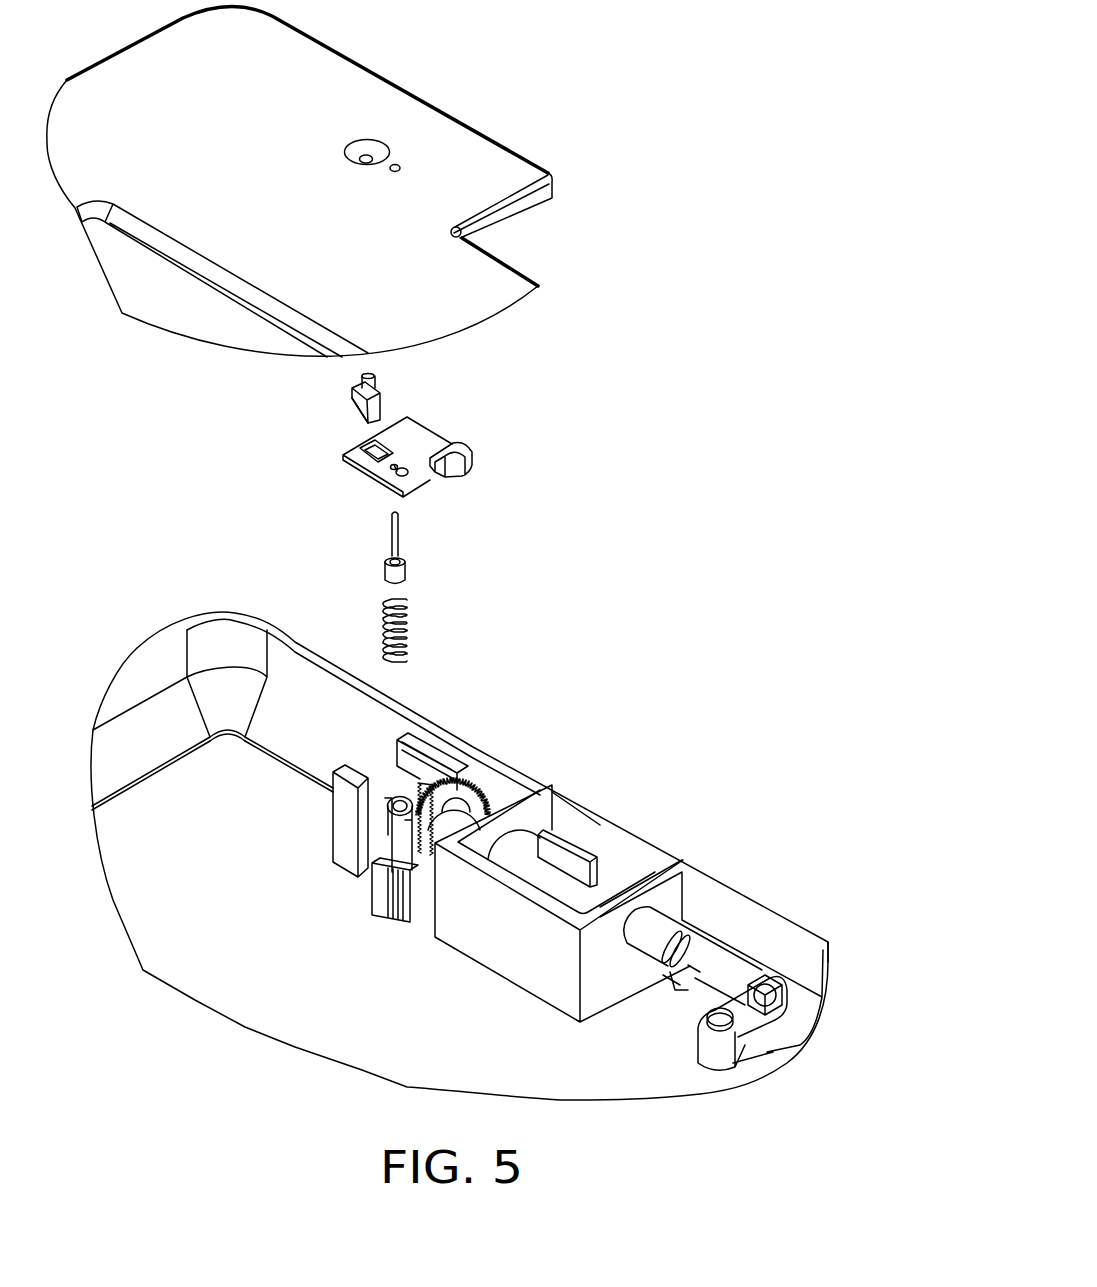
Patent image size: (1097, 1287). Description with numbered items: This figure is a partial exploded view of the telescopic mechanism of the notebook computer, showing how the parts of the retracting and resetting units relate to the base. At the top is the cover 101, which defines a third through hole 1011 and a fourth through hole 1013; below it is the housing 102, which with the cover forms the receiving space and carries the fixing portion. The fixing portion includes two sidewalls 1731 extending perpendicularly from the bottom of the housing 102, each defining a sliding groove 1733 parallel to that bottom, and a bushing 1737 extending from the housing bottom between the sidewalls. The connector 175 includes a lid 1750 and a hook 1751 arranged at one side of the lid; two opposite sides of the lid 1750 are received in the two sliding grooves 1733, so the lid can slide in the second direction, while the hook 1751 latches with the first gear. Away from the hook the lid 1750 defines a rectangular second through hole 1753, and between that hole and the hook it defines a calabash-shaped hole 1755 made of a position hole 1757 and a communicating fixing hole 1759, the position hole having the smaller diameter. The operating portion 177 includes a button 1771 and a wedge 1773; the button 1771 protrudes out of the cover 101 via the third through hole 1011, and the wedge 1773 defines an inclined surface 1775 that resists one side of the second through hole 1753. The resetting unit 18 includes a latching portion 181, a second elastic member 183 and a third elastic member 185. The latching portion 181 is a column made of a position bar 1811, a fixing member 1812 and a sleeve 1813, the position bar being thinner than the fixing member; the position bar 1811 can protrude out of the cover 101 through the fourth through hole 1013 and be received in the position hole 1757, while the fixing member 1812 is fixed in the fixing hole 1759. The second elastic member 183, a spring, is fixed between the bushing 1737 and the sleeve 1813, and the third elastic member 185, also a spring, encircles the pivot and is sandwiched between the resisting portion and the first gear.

The cover 101 is at (483, 177).
The third through hole 1011 is at (367, 147).
The fourth through hole 1013 is at (398, 163).
The housing 102 is at (160, 643).
The connector 175 is at (382, 441).
The lid 1750 is at (397, 410).
The hook 1751 is at (458, 447).
The second through hole 1753 is at (390, 452).
The calabash-shaped hole 1755 is at (300, 501).
The position hole 1757 is at (393, 468).
The fixing hole 1759 is at (402, 475).
The operating portion 177 is at (259, 415).
The button 1771 is at (360, 374).
The wedge 1773 is at (352, 405).
The inclined surface 1775 is at (357, 415).
The resetting unit 18 is at (508, 647).
The latching portion 181 is at (485, 551).
The position bar 1811 is at (396, 533).
The fixing member 1812 is at (401, 560).
The sleeve 1813 is at (407, 572).
The second elastic member 183 is at (405, 625).
The third elastic member 185 is at (415, 778).
The sidewall 1731 is at (357, 855).
The sliding groove 1733 is at (458, 770).
The bushing 1737 is at (388, 797).